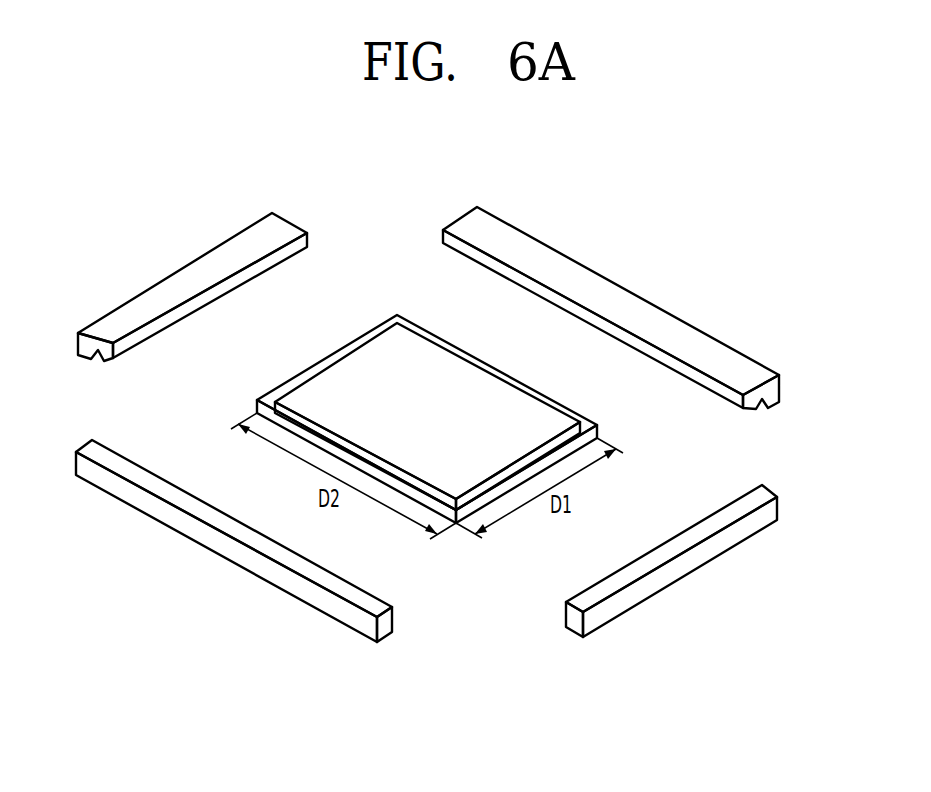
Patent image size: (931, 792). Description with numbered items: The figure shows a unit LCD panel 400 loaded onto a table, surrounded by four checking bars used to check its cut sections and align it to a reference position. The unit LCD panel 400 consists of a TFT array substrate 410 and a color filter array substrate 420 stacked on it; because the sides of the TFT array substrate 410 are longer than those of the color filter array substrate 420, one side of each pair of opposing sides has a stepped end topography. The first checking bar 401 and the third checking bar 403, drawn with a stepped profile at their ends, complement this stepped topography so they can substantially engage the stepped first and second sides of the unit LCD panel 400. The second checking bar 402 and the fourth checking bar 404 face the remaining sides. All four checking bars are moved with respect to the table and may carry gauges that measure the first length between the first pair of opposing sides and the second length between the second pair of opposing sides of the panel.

The unit LCD panel 400 is at (427, 395).
The TFT array substrate 410 is at (297, 376).
The color filter array substrate 420 is at (338, 371).
The first checking bar 401 is at (618, 295).
The second checking bar 402 is at (183, 527).
The third checking bar 403 is at (183, 273).
The fourth checking bar 404 is at (692, 567).